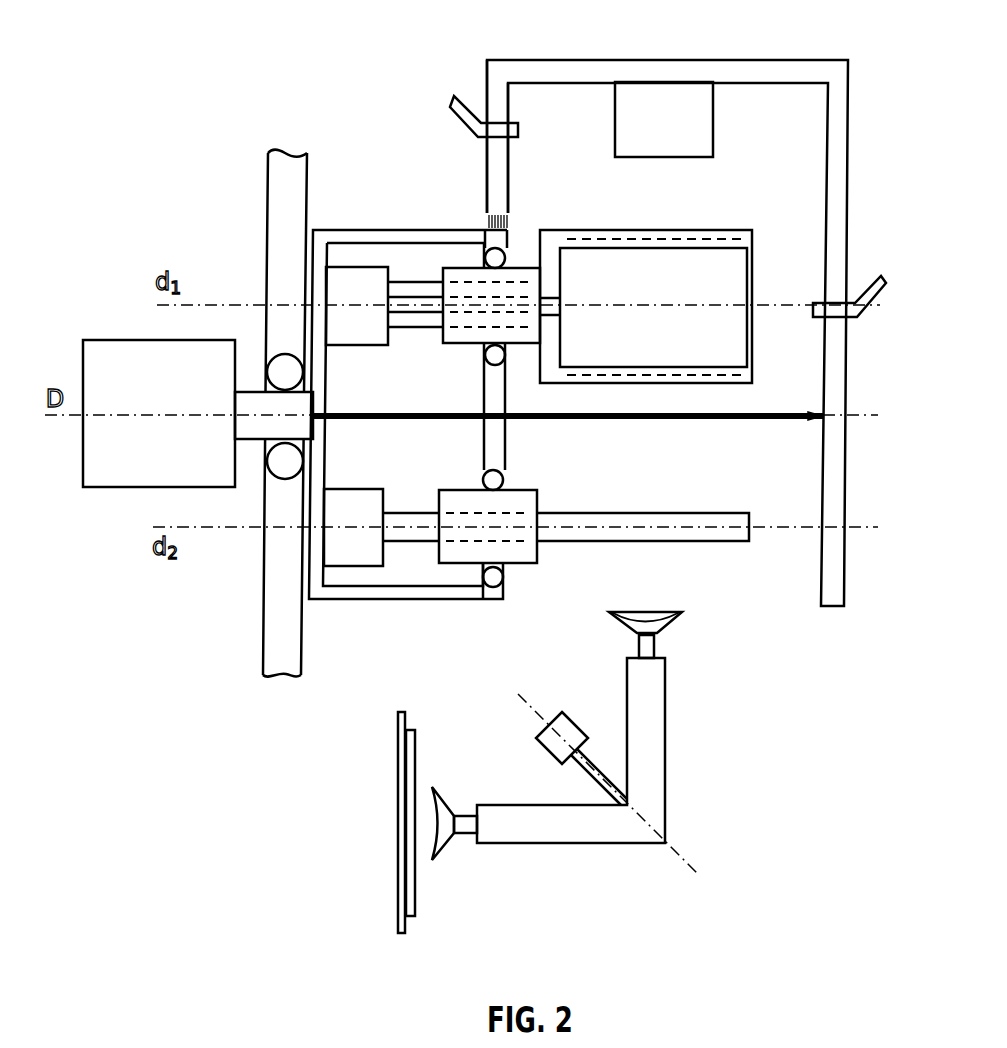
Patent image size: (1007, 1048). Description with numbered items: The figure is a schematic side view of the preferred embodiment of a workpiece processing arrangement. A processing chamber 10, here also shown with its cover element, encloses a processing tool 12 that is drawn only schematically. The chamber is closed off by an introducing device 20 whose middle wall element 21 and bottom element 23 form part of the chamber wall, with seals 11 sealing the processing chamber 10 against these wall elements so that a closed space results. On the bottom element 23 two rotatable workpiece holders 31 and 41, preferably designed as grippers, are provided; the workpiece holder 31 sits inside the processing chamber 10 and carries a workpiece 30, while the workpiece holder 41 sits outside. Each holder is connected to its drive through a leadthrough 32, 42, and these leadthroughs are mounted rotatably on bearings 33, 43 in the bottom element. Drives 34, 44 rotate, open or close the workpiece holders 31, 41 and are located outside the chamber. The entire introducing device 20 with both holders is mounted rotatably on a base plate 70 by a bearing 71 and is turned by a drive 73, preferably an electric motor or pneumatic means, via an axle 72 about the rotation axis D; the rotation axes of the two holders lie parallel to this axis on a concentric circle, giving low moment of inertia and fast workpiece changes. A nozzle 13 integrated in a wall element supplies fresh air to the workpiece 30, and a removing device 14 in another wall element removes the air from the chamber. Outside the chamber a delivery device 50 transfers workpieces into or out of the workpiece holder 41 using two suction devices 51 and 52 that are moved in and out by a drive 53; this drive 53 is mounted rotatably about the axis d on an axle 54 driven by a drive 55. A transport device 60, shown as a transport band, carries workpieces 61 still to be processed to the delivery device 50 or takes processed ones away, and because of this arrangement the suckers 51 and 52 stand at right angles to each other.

The processing chamber 10 is at (750, 70).
The seals 11 is at (822, 415).
The processing tool 12 is at (663, 102).
The nozzle 13 is at (866, 290).
The removing device 14 is at (458, 102).
The introducing device 20 is at (529, 368).
The middle wall element 21 is at (790, 422).
The bottom element 23 is at (342, 235).
The workpiece 30 is at (730, 285).
The workpiece holder 31 is at (415, 290).
The leadthrough 32 is at (470, 272).
The bearing 33 is at (493, 252).
The drive 34 is at (368, 290).
The workpiece holder 41 is at (413, 528).
The leadthrough 42 is at (472, 555).
The bearing 43 is at (493, 575).
The drive 44 is at (357, 535).
The delivery device 50 is at (578, 750).
The suction device 51 is at (650, 622).
The suction device 52 is at (445, 828).
The drive 53 is at (652, 748).
The axle 54 is at (595, 772).
The drive 55 is at (556, 740).
The transport device 60 is at (398, 818).
The workpieces 61 is at (410, 888).
The base plate 70 is at (283, 235).
The bearing 71 is at (285, 461).
The axle 72 is at (255, 402).
The drive 73 is at (155, 468).